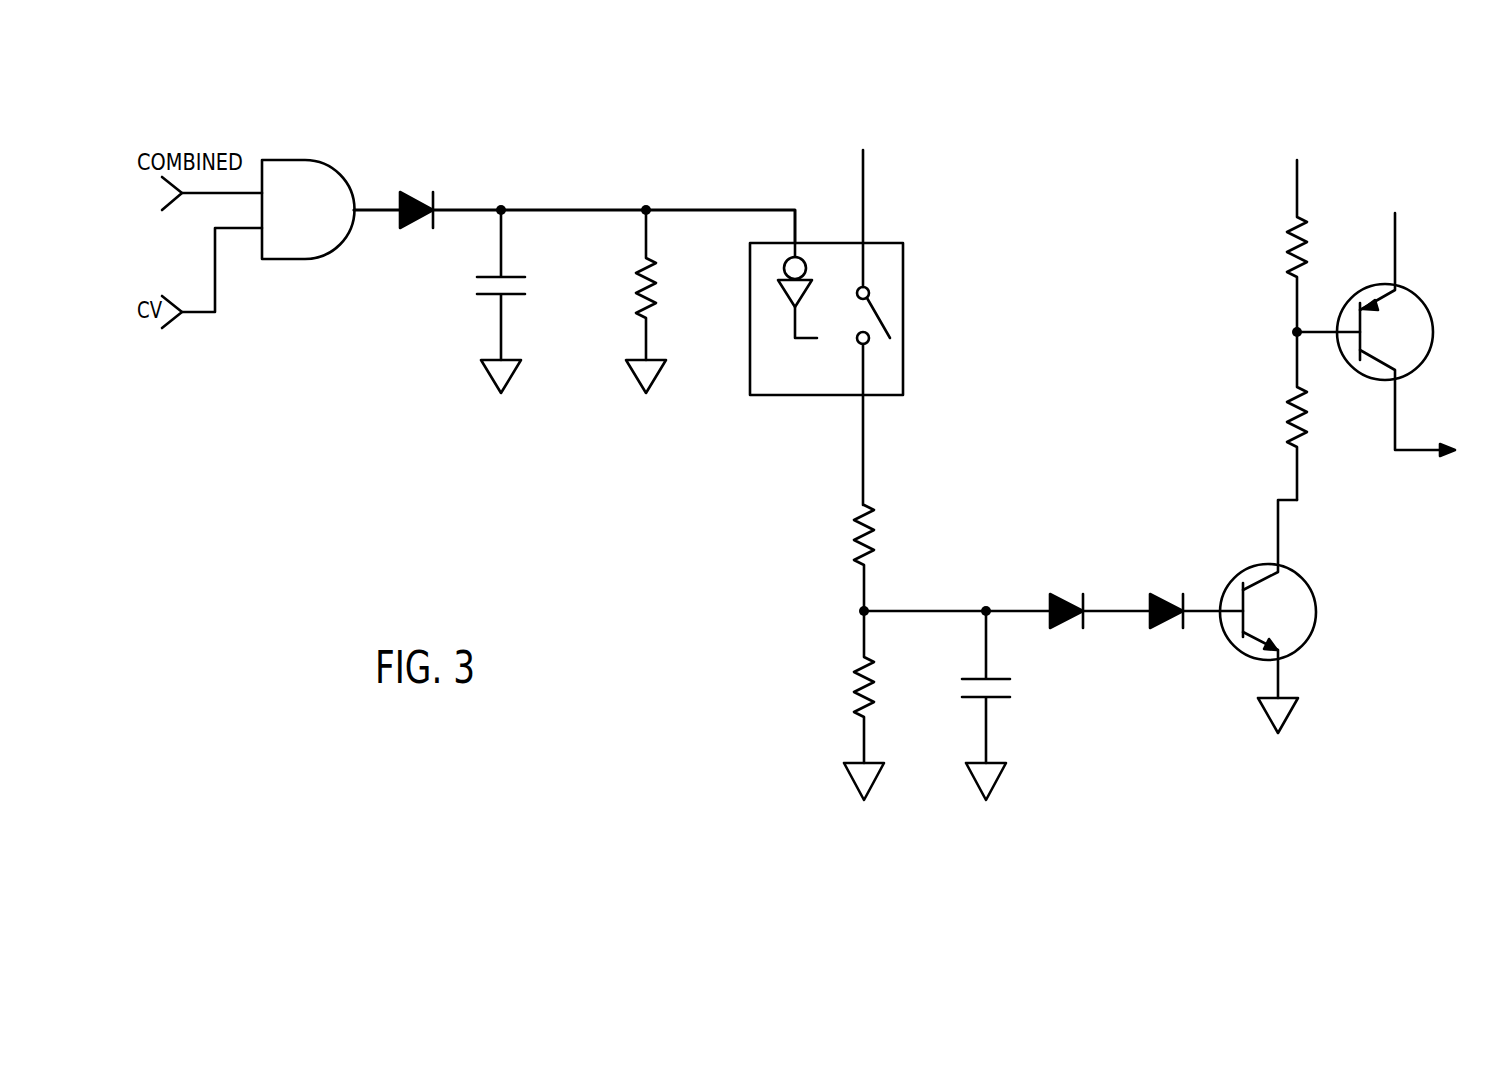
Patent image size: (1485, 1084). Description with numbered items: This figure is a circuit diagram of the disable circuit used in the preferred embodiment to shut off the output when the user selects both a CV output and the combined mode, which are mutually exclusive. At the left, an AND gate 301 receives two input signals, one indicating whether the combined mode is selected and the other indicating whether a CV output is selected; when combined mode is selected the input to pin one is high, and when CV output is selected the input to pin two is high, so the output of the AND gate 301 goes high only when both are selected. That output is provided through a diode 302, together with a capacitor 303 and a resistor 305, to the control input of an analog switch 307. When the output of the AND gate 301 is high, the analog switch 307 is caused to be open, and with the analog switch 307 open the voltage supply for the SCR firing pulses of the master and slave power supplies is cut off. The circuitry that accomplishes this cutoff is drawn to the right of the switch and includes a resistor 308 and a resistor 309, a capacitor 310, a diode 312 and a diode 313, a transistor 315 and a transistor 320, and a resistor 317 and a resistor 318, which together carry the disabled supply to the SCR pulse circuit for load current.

The AND gate 301 is at (310, 160).
The diode 302 is at (417, 198).
The capacitor 303 is at (515, 277).
The resistor 305 is at (655, 300).
The analog switch 307 is at (903, 282).
The resistor 308 is at (872, 537).
The resistor 309 is at (857, 692).
The capacitor 310 is at (995, 698).
The diode 312 is at (1062, 593).
The diode 313 is at (1168, 600).
The transistor 315 is at (1295, 652).
The resistor 317 is at (1290, 243).
The resistor 318 is at (1287, 423).
The transistor 320 is at (1395, 290).